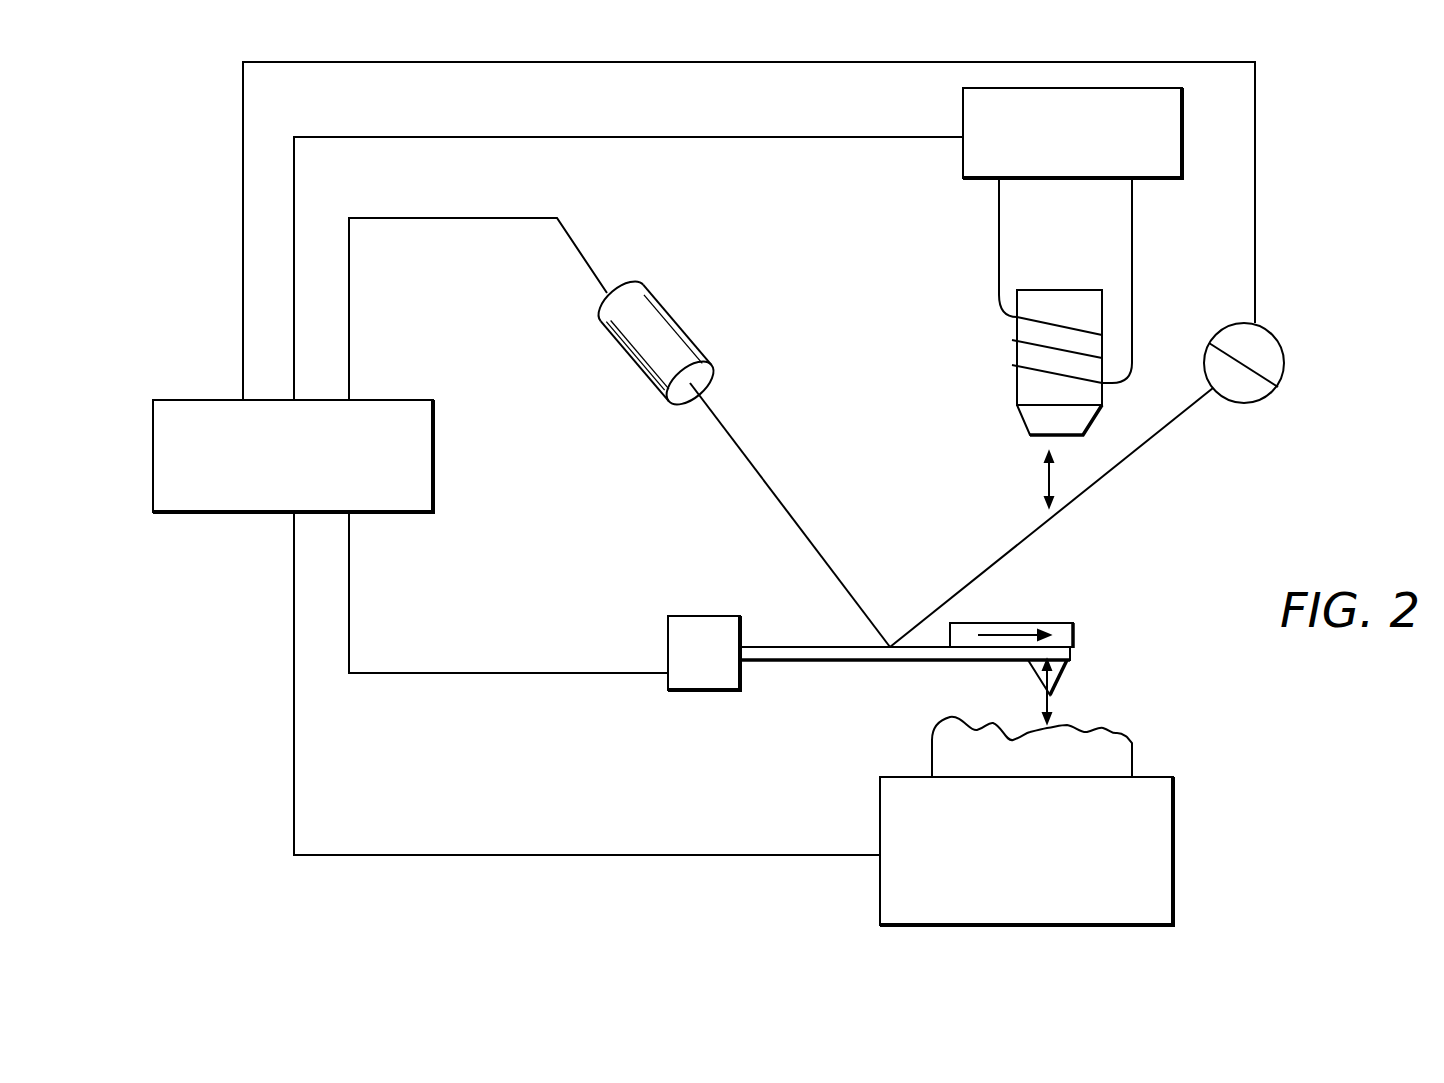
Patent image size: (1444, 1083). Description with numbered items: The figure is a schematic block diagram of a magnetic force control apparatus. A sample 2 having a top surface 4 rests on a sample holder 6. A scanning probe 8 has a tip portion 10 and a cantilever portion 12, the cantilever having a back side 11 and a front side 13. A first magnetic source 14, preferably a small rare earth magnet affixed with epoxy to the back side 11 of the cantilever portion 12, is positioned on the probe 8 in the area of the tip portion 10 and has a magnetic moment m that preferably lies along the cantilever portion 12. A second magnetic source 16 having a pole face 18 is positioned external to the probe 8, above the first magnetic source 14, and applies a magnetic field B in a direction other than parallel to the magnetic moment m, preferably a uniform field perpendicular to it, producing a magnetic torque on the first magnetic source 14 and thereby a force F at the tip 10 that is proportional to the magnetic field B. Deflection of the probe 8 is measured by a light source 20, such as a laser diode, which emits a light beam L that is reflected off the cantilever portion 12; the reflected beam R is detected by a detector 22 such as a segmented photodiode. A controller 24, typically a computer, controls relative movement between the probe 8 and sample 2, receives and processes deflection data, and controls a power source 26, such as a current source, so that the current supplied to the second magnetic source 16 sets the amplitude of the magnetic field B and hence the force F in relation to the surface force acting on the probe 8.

The sample 2 is at (1133, 757).
The top surface 4 is at (1128, 732).
The sample holder 6 is at (1175, 858).
The probe 8 is at (765, 636).
The tip portion 10 is at (1062, 672).
The back side 11 is at (858, 645).
The cantilever portion 12 is at (813, 645).
The front side 13 is at (868, 662).
The first magnetic source 14 is at (997, 622).
The second magnetic source 16 is at (1057, 290).
The pole face 18 is at (1020, 420).
The light source 20 is at (693, 337).
The detector 22 is at (1283, 355).
The controller 24 is at (153, 412).
The power source 26 is at (962, 172).
The light beam L is at (740, 448).
The reflected beam R is at (1108, 479).
The magnetic field B is at (1045, 478).
The force F is at (1060, 682).
The magnetic moment m is at (1040, 623).